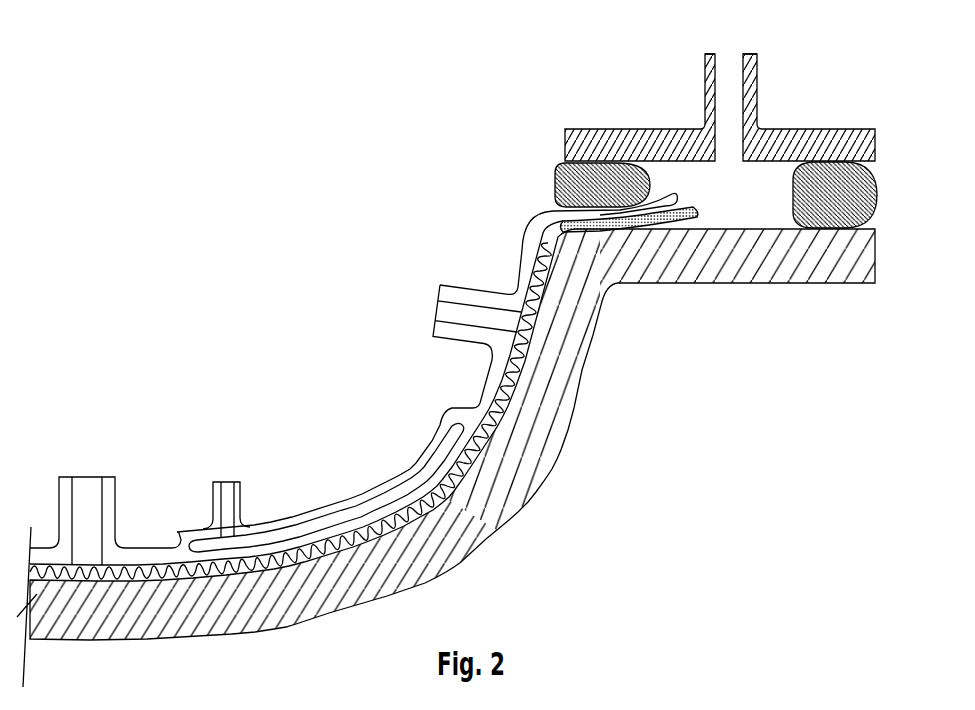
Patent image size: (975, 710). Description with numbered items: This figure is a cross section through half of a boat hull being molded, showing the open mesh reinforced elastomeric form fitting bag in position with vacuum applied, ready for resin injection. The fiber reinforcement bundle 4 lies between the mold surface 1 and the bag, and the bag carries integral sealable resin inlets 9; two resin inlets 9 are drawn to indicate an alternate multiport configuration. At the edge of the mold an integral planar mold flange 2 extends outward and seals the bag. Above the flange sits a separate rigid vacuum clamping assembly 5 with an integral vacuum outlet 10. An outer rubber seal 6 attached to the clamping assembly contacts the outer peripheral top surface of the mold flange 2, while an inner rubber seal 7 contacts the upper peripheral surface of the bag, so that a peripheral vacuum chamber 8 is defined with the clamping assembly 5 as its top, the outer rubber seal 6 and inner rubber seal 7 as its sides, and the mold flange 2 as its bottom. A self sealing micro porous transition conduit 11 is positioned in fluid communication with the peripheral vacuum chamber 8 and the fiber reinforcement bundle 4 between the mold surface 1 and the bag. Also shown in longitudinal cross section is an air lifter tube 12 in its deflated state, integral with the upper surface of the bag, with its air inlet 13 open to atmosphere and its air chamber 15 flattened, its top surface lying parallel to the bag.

The mold surface 1 is at (512, 391).
The integral planar mold flange 2 is at (789, 285).
The fiber reinforcement bundle 4 is at (533, 283).
The rigid vacuum clamping assembly 5 is at (592, 127).
The outer rubber seal 6 is at (551, 181).
The inner rubber seal 7 is at (878, 178).
The peripheral vacuum chamber 8 is at (748, 192).
The resin inlet 9 is at (87, 478).
The vacuum outlet 10 is at (733, 100).
The self sealing micro porous transition conduit 11 is at (575, 222).
The air lifter tube 12 is at (335, 493).
The air inlet 13 is at (227, 477).
The air chamber 15 is at (392, 487).